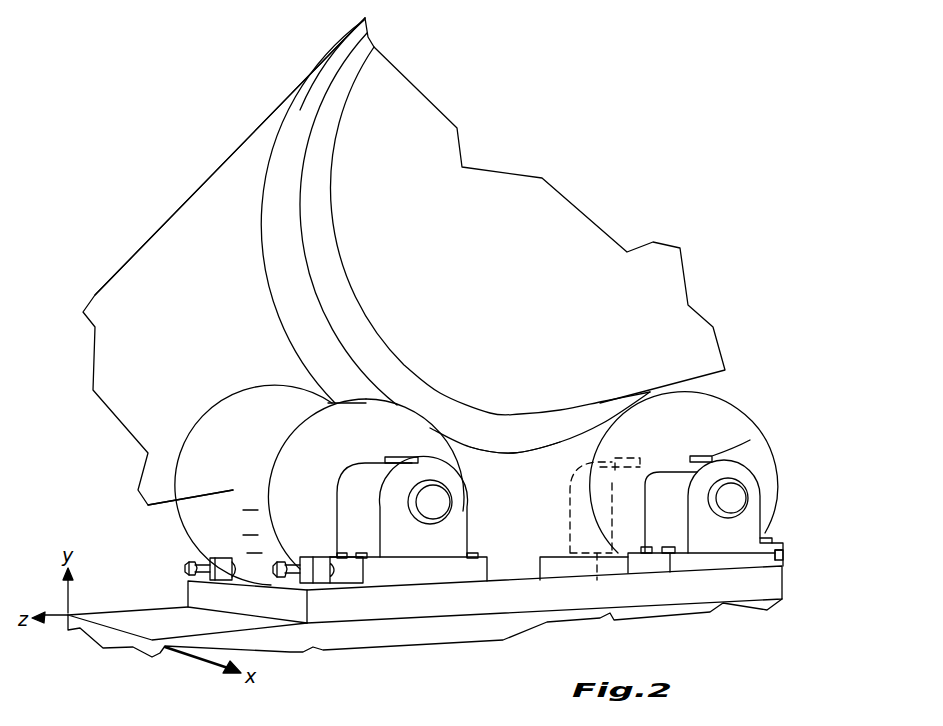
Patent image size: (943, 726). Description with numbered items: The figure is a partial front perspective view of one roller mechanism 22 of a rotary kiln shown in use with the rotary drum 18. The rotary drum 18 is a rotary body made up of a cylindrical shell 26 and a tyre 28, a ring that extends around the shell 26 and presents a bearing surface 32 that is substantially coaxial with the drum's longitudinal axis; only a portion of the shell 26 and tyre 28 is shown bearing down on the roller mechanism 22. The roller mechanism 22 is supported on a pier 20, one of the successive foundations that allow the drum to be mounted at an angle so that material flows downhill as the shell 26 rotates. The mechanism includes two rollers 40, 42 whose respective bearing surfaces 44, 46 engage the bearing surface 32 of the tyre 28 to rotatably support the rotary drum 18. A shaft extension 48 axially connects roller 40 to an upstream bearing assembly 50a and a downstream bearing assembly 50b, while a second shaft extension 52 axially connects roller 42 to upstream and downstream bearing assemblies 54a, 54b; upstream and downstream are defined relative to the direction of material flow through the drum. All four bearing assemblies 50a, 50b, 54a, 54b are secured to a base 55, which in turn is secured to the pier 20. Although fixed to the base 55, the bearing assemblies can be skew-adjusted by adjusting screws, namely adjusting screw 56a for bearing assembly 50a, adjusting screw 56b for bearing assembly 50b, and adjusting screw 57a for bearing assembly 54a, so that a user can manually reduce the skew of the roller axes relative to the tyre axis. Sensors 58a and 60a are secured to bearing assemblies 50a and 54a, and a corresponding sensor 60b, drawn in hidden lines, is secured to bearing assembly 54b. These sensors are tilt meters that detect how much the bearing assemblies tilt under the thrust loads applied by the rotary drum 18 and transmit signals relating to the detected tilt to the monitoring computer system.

The rotary drum 18 is at (184, 170).
The pier 20 is at (135, 640).
The roller mechanism 22 is at (786, 360).
The shell 26 is at (155, 263).
The tyre 28 is at (328, 206).
The bearing surface 32 is at (307, 98).
The roller 40 is at (197, 505).
The roller 42 is at (740, 401).
The bearing surface 44 is at (270, 450).
The bearing surface 46 is at (560, 455).
The shaft extension 48 is at (437, 507).
The bearing assembly 50a is at (455, 523).
The bearing assembly 50b is at (238, 560).
The shaft extension 52 is at (733, 508).
The bearing assembly 54a is at (752, 520).
The bearing assembly 54b is at (545, 572).
The base 55 is at (367, 602).
The adjusting screw 56a is at (322, 572).
The adjusting screw 56b is at (187, 568).
The adjusting screw 57a is at (788, 547).
The sensor 58a is at (397, 457).
The sensor 60a is at (750, 440).
The sensor 60b is at (640, 443).